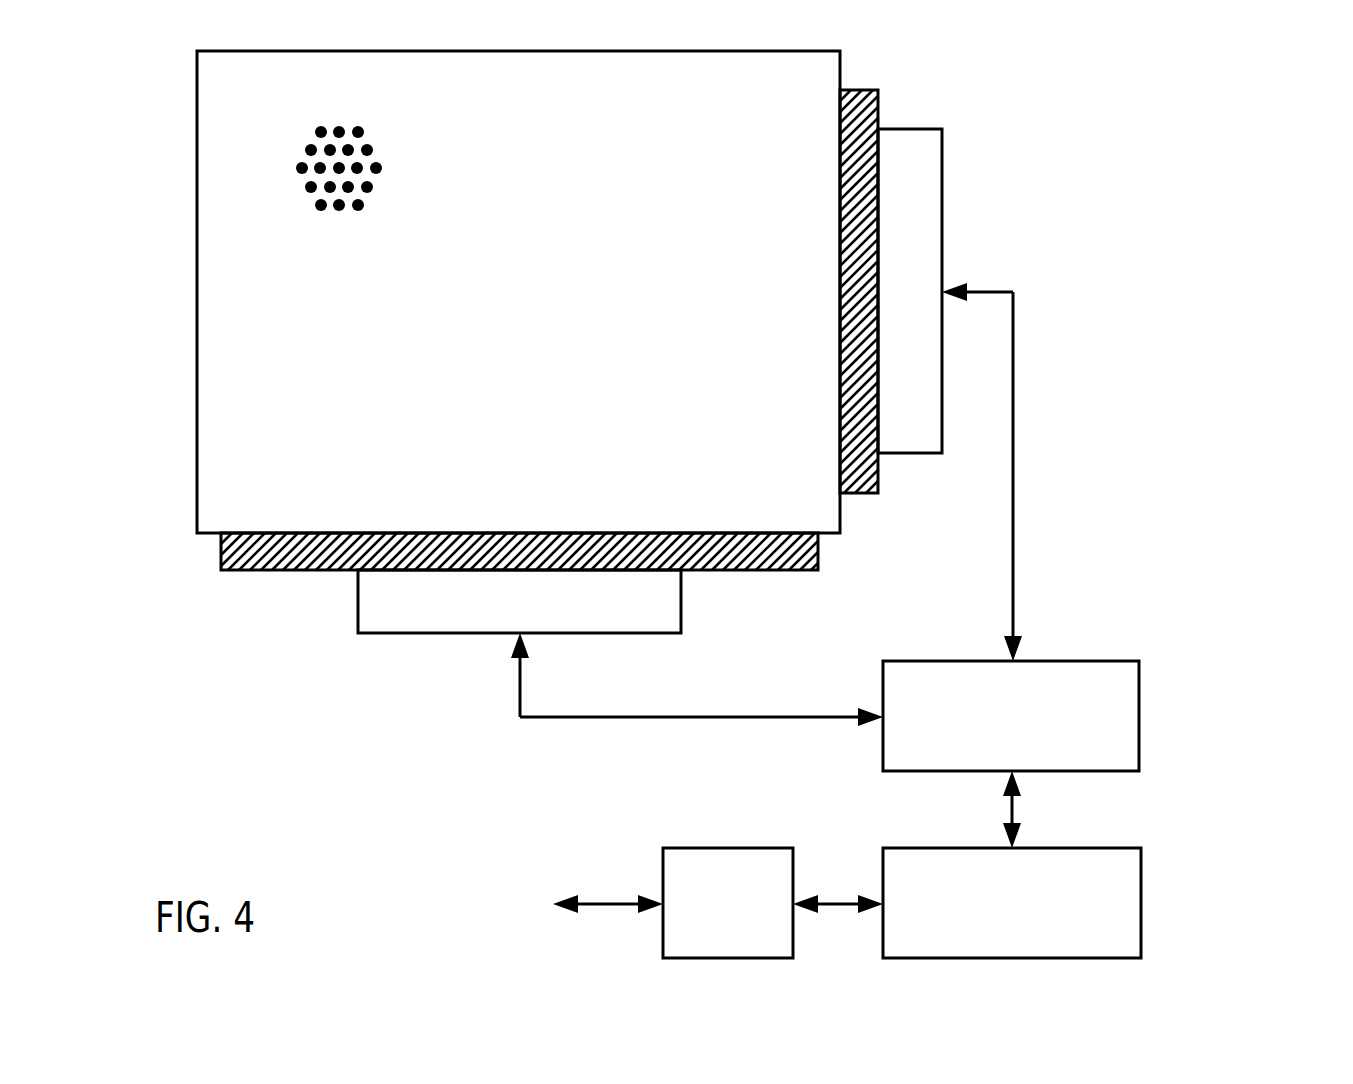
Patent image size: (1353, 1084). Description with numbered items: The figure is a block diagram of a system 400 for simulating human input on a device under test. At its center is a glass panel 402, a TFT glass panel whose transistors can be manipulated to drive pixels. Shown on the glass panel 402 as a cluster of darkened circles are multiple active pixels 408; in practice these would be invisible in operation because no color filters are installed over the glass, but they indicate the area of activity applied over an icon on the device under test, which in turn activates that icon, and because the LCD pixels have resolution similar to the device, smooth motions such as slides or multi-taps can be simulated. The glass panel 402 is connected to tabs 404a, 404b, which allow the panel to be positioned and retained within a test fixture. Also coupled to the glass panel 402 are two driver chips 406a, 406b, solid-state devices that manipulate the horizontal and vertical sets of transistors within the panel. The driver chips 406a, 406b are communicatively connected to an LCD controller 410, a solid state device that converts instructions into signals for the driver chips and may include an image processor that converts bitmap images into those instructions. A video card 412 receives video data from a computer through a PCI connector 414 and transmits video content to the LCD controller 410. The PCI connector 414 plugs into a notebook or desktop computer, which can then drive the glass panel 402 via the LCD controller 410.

The system 400 is at (1212, 120).
The glass panel 402 is at (197, 195).
The tab 404a is at (857, 90).
The tab 404b is at (237, 572).
The driver chip 406a is at (908, 129).
The driver chip 406b is at (392, 633).
The active pixels 408 is at (378, 145).
The LCD controller 410 is at (1112, 729).
The video card 412 is at (1093, 917).
The PCI connector 414 is at (770, 917).